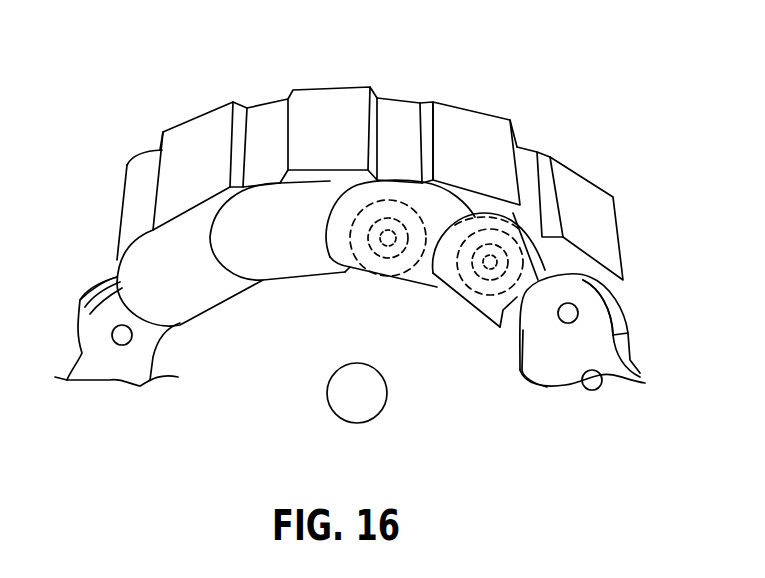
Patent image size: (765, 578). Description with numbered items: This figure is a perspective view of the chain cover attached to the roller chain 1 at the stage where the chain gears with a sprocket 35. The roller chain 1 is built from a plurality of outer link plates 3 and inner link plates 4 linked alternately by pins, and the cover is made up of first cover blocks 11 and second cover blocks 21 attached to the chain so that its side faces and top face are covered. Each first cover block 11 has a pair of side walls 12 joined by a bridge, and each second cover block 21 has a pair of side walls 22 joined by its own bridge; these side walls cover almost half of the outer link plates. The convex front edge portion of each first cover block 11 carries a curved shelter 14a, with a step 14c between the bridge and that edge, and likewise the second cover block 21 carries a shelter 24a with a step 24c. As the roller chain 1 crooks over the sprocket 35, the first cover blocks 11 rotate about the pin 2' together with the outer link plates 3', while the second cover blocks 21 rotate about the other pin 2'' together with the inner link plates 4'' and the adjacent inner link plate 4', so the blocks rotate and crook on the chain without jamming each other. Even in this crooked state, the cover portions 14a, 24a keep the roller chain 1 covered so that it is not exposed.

The roller chain 1 is at (687, 237).
The outer link plate 3 is at (364, 332).
The inner link plate 4 is at (631, 290).
The first cover block 11 is at (197, 111).
The side wall 12 is at (207, 297).
The shelter 14a is at (140, 178).
The step 14c is at (423, 98).
The second cover block 21 is at (334, 82).
The side wall 22 is at (298, 250).
The shelter 24a is at (267, 110).
The step 24c is at (550, 153).
The sprocket 35 is at (270, 387).
The inner link plate 4' is at (371, 264).
The pin 2' is at (381, 272).
The outer link plate 3' is at (469, 294).
The pin 2'' is at (477, 294).
The inner link plate 4'' is at (493, 318).